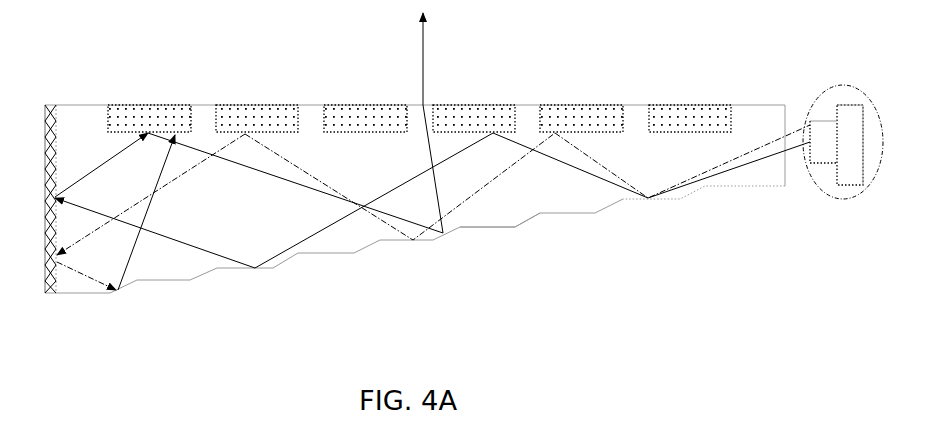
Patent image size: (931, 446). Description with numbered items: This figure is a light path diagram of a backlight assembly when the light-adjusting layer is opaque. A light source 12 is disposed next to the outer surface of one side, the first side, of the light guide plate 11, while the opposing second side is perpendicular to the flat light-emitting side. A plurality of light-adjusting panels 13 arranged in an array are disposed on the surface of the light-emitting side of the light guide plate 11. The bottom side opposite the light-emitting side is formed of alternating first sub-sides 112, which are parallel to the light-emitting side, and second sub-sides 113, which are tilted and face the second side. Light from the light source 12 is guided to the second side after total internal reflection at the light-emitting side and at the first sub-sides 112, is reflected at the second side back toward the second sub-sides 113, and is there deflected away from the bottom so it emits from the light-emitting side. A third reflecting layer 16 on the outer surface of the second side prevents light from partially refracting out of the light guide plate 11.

The light guide plate 11 is at (85, 132).
The light source 12 is at (820, 95).
The light-adjusting panels 13 is at (690, 117).
The third reflecting layer 16 is at (53, 225).
The first sub-sides 112 is at (483, 228).
The second sub-sides 113 is at (526, 222).